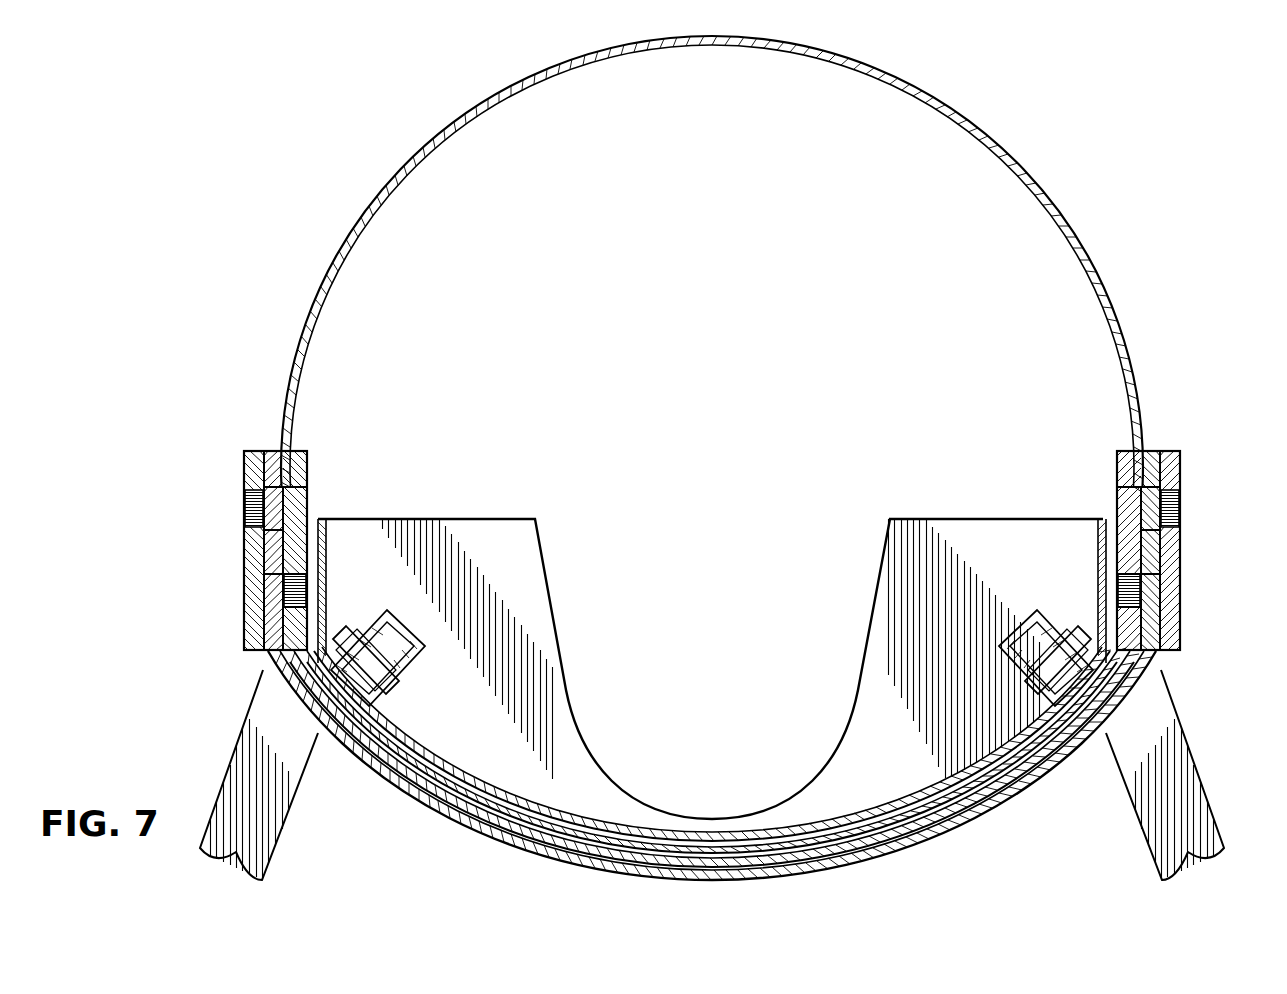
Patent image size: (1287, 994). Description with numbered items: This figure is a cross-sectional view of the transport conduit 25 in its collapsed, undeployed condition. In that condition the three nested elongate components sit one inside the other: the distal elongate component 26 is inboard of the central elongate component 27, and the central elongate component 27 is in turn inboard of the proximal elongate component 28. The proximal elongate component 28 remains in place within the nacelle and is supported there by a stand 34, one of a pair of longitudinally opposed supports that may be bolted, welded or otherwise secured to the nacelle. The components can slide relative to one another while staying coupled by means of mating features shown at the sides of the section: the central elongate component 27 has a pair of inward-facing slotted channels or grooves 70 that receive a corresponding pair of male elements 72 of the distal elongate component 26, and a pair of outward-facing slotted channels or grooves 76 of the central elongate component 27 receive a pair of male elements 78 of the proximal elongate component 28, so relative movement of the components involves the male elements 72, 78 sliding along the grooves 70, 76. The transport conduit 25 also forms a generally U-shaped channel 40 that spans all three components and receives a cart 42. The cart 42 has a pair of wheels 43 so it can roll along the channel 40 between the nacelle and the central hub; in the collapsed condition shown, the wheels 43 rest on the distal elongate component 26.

The transport conduit 25 is at (296, 59).
The central elongate component 27 is at (457, 120).
The distal elongate component 26 is at (309, 457).
The inward-facing slotted channels or grooves 70 is at (266, 492).
The male elements 72 is at (250, 508).
The outward-facing slotted channels or grooves 76 is at (293, 580).
The male elements 78 is at (278, 594).
The cart 42 is at (500, 519).
The U-shaped channel 40 is at (712, 835).
The proximal elongate component 28 is at (245, 572).
The wheels 43 is at (398, 660).
The stand 34 is at (1186, 737).